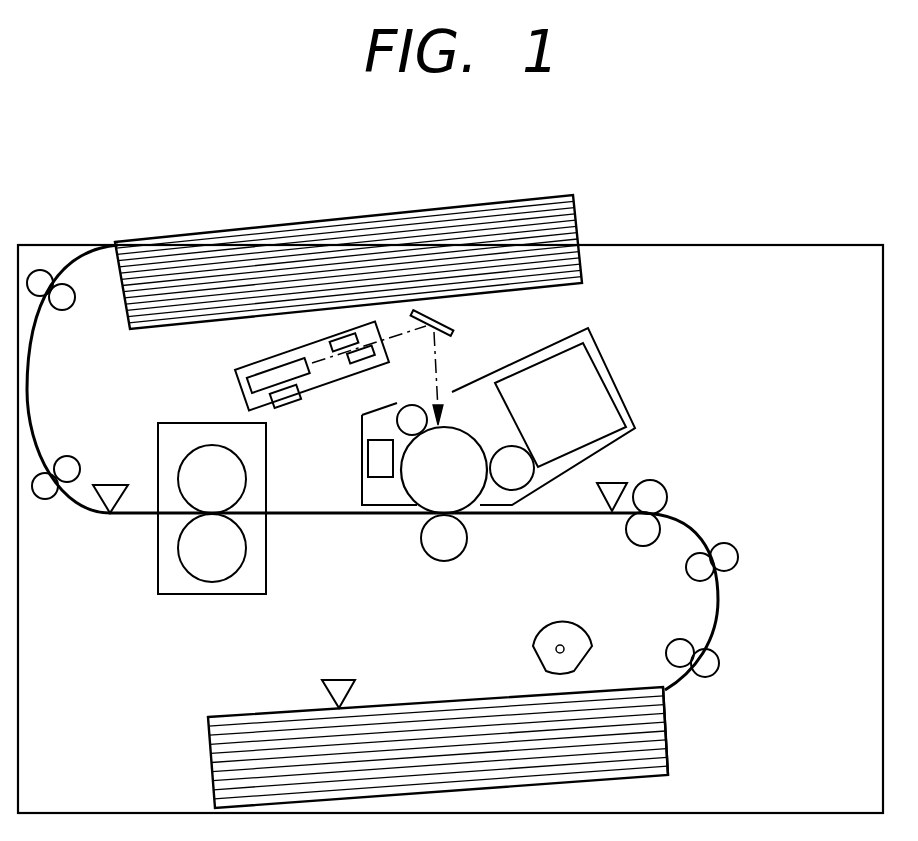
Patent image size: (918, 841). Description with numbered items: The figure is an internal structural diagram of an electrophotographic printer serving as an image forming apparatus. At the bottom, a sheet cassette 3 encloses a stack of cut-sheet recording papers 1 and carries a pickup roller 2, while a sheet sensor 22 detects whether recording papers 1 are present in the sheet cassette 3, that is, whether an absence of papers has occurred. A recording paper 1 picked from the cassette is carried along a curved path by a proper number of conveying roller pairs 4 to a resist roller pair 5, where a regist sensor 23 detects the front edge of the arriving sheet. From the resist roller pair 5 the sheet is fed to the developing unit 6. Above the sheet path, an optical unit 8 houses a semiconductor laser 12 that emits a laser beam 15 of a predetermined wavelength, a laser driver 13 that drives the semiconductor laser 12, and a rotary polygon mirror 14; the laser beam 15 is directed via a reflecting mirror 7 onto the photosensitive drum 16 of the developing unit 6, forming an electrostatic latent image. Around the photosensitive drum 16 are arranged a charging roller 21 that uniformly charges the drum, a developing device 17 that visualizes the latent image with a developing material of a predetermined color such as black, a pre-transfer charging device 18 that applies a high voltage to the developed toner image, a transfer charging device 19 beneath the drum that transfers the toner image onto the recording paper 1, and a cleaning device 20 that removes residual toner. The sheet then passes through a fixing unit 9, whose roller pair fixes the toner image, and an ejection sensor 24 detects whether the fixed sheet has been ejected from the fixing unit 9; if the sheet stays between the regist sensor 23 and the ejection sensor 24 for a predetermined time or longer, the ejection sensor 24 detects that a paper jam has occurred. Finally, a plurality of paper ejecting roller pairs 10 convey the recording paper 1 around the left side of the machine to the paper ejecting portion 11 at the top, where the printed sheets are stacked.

The recording paper 1 is at (445, 700).
The pickup roller 2 is at (582, 628).
The sheet cassette 3 is at (668, 735).
The conveying roller pairs 4 is at (739, 556).
The resist roller pair 5 is at (666, 488).
The developing unit 6 is at (556, 411).
The reflecting mirror 7 is at (455, 326).
The optical unit 8 is at (287, 377).
The fixing unit 9 is at (268, 450).
The paper ejecting roller pairs 10 is at (72, 310).
The paper ejecting portion 11 is at (412, 211).
The semiconductor laser 12 is at (246, 386).
The laser driver 13 is at (336, 339).
The rotary polygon mirror 14 is at (356, 361).
The laser beam 15 is at (440, 372).
The photosensitive drum 16 is at (456, 428).
The developing device 17 is at (612, 374).
The pre-transfer charging device 18 is at (540, 484).
The transfer charging device 19 is at (462, 554).
The cleaning device 20 is at (367, 462).
The charging roller 21 is at (409, 405).
The sheet sensor 22 is at (348, 679).
The regist sensor 23 is at (617, 482).
The ejection sensor 24 is at (112, 484).